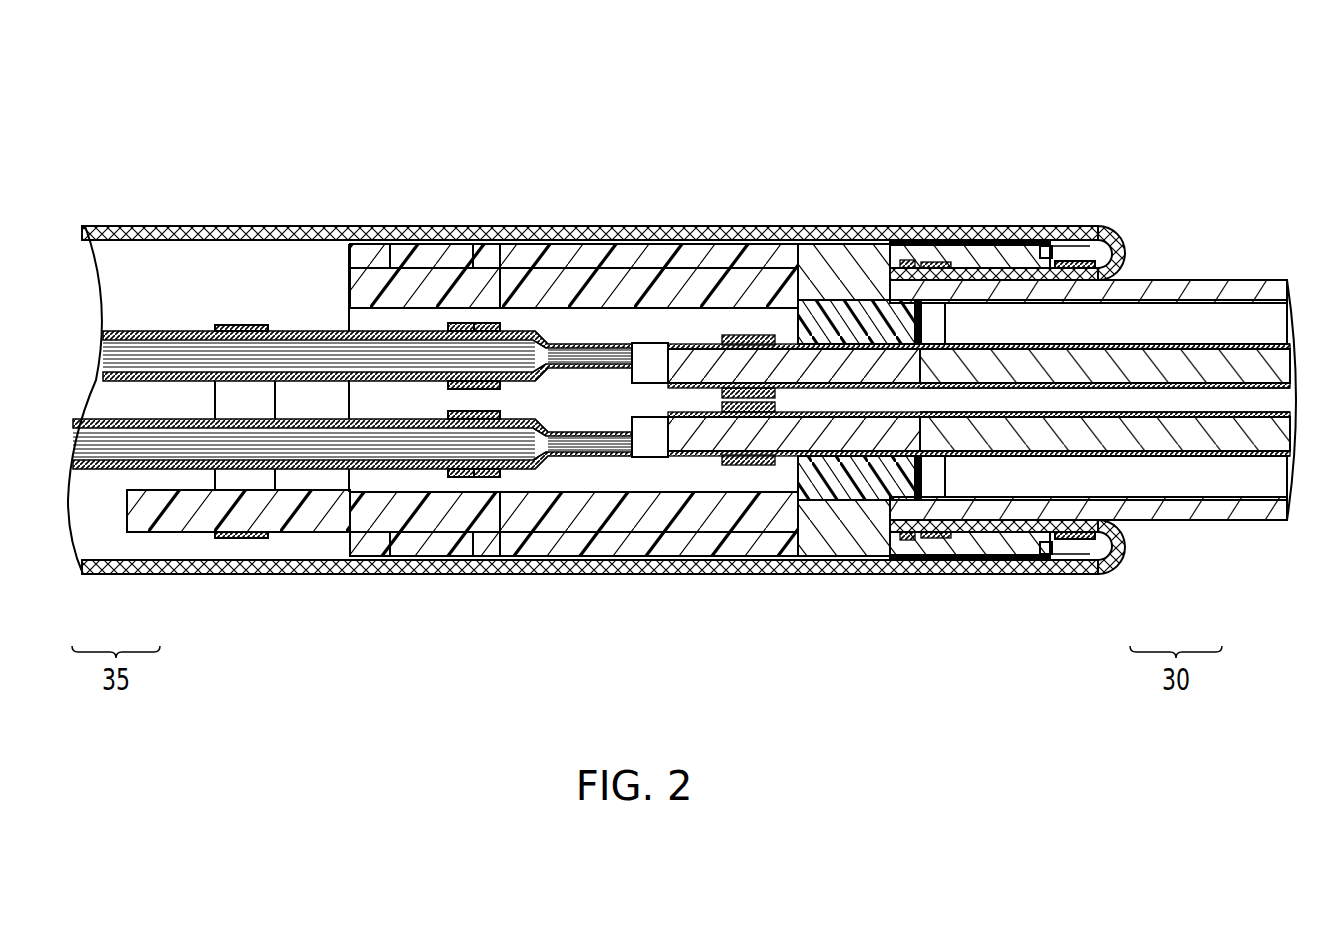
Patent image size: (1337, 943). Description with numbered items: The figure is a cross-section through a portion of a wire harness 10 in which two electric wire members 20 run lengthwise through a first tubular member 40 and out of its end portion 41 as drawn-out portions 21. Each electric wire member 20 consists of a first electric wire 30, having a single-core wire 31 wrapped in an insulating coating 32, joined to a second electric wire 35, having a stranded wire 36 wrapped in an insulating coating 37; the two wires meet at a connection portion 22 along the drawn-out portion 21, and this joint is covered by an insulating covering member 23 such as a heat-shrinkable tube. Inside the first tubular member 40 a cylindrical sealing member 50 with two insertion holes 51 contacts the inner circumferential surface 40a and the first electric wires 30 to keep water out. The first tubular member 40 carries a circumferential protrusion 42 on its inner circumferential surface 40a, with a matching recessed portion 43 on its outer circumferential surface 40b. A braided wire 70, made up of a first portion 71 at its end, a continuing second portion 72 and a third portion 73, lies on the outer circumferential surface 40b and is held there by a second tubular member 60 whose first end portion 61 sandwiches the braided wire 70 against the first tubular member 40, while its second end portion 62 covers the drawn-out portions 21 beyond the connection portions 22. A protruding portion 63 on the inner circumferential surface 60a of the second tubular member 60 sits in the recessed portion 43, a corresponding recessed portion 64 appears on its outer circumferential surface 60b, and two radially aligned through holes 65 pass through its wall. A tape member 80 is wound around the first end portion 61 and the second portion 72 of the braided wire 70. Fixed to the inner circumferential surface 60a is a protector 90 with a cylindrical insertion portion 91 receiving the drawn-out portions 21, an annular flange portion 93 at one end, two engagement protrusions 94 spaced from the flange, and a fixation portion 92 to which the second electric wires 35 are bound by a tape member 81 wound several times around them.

The wire harness 10 is at (1148, 78).
The electric wire member 20 is at (352, 410).
The drawn-out portion 21 is at (300, 331).
The connection portion 22 is at (628, 343).
The covering member 23 is at (527, 336).
The first electric wire 30 is at (1116, 436).
The single-core wire 31 is at (1160, 440).
The insulating coating 32 is at (1215, 465).
The second electric wire 35 is at (132, 328).
The stranded wire 36 is at (103, 470).
The insulating coating 37 is at (150, 445).
The first tubular member 40 is at (1093, 328).
The inner circumferential surface 40a is at (1180, 296).
The outer circumferential surface 40b is at (1228, 282).
The end portion 41 is at (858, 410).
The protrusion 42 is at (882, 300).
The recessed portion 43 is at (955, 305).
The sealing member 50 is at (924, 346).
The insertion hole 51 is at (845, 345).
The second tubular member 60 is at (562, 346).
The inner circumferential surface 60a is at (722, 250).
The outer circumferential surface 60b is at (768, 242).
The first end portion 61 is at (1052, 243).
The second end portion 62 is at (405, 250).
The protruding portion 63 is at (908, 262).
The recessed portion 64 is at (932, 290).
The through hole 65 is at (470, 324).
The braided wire 70 is at (629, 355).
The first portion 71 is at (1045, 252).
The second portion 72 is at (1128, 262).
The third portion 73 is at (1000, 268).
The tape member 80 is at (1082, 262).
The tape member 81 is at (240, 323).
The protector 90 is at (600, 340).
The insertion portion 91 is at (700, 275).
The fixation portion 92 is at (212, 538).
The flange portion 93 is at (352, 246).
The engagement protrusion 94 is at (492, 324).